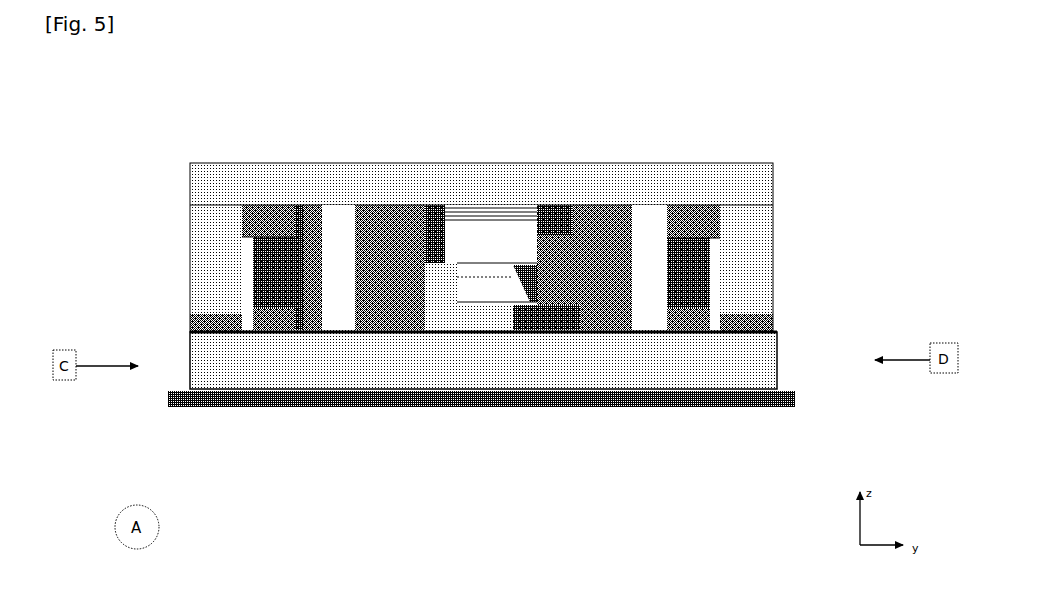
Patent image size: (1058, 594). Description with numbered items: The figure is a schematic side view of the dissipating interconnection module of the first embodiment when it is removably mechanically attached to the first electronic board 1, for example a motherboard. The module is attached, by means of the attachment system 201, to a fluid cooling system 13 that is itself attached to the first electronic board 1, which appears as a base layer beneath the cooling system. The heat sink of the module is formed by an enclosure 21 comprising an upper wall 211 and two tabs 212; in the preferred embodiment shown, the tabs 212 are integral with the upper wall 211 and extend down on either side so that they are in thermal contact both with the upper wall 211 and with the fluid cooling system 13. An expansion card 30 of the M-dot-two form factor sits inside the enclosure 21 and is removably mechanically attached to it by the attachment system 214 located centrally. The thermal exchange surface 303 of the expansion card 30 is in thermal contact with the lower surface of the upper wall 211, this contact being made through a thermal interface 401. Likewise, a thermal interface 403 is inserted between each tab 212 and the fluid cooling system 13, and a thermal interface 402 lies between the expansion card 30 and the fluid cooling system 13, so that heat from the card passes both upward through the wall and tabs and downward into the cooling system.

The first electronic board 1 is at (578, 408).
The fluid cooling system 13 is at (253, 377).
The enclosure 21 is at (868, 170).
The expansion card 30 is at (683, 252).
The attachment system 201 is at (328, 222).
The upper wall 211 is at (544, 183).
The tabs 212 is at (205, 273).
The attachment system 214 is at (482, 230).
The thermal exchange surface 303 is at (399, 230).
The thermal interface 401 is at (268, 218).
The thermal interface 402 is at (268, 318).
The thermal interface 403 is at (205, 325).